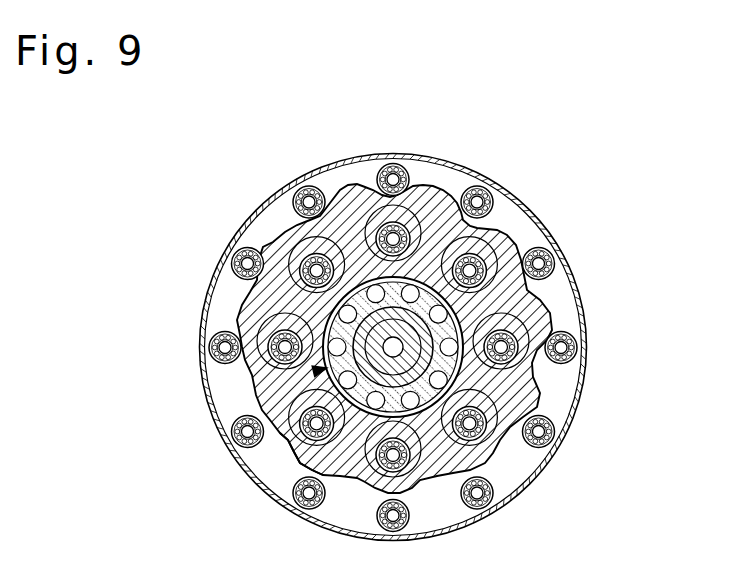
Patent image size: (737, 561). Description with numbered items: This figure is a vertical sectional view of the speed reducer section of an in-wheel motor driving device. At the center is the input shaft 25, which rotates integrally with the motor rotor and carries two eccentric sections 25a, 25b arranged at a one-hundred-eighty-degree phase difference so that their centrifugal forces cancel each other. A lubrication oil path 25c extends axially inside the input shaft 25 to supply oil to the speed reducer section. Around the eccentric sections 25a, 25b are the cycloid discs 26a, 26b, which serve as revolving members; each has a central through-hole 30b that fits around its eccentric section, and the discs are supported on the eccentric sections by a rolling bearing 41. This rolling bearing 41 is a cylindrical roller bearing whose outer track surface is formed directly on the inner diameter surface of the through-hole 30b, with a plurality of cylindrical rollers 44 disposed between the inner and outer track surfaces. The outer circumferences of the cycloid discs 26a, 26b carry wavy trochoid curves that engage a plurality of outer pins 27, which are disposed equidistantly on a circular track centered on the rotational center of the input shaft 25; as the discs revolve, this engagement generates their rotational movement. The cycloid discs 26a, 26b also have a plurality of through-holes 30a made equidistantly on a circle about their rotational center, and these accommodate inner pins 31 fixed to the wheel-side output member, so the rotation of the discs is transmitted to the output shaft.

The input shaft 25 is at (325, 343).
The eccentric section 25a is at (441, 287).
The eccentric section 25b is at (393, 347).
The lubrication oil path 25c is at (393, 347).
The cycloid disc 26a is at (390, 350).
The cycloid disc 26b is at (243, 304).
The outer pin 27 is at (236, 267).
The through-hole 30a is at (291, 254).
The through-hole 30b is at (322, 346).
The inner pin 31 is at (393, 239).
The rolling bearing 41 is at (318, 370).
The cylindrical roller 44 is at (299, 460).